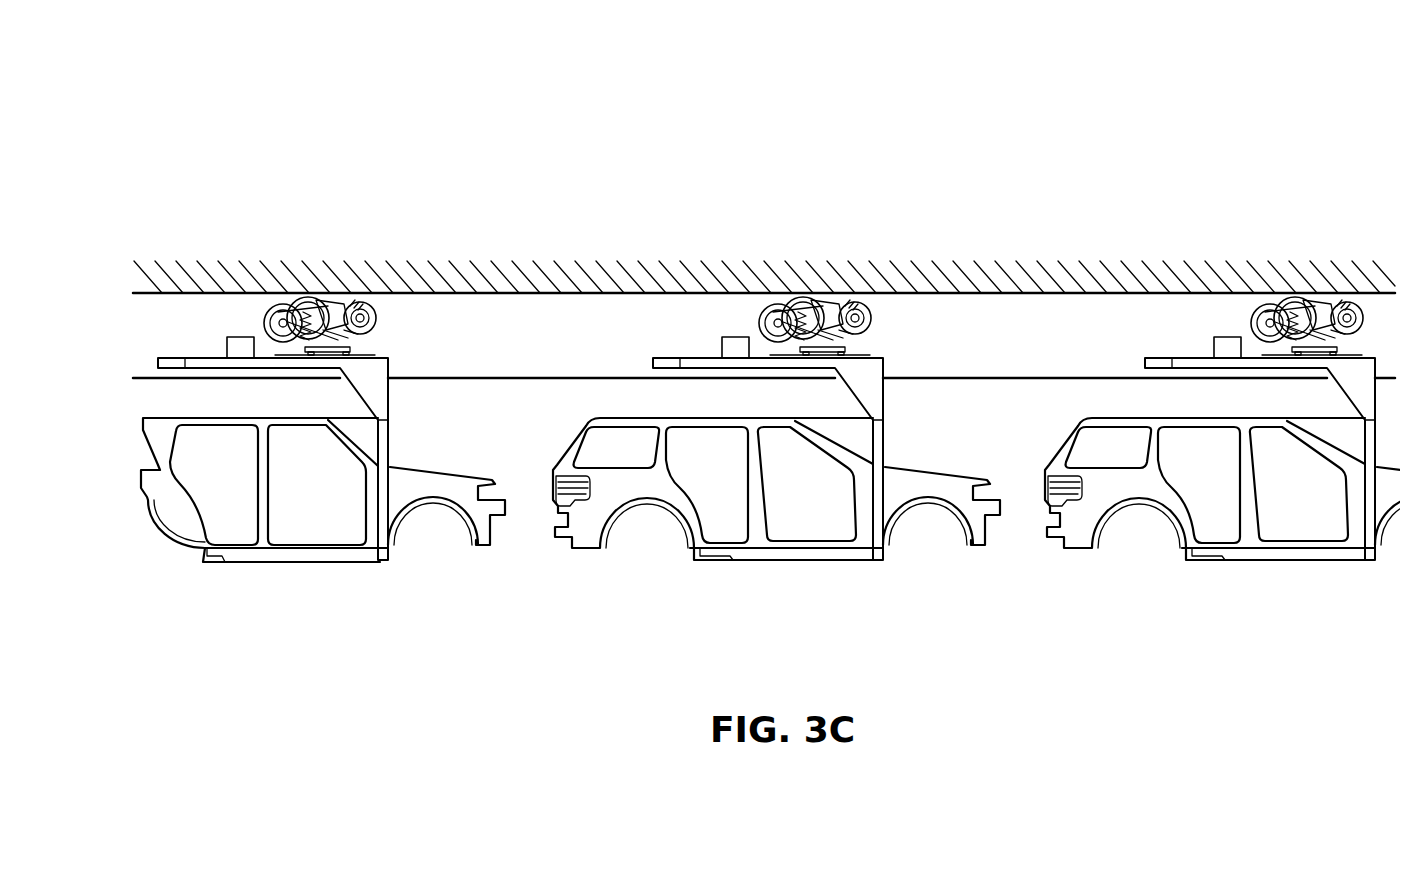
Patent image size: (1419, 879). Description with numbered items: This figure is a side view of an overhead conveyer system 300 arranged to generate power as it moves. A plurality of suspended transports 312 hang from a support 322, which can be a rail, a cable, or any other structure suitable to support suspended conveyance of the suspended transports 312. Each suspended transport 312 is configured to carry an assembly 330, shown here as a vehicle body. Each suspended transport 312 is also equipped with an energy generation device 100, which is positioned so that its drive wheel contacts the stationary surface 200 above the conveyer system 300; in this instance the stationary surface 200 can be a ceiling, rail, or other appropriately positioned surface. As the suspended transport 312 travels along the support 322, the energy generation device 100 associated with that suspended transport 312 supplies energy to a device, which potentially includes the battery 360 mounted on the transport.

The conveyer system 300 is at (1052, 176).
The stationary surface 200 is at (1046, 293).
The support 322 is at (572, 378).
The suspended transport 312 is at (388, 420).
The battery 360 is at (237, 337).
The energy generation device 100 is at (383, 323).
The assembly 330 is at (480, 478).